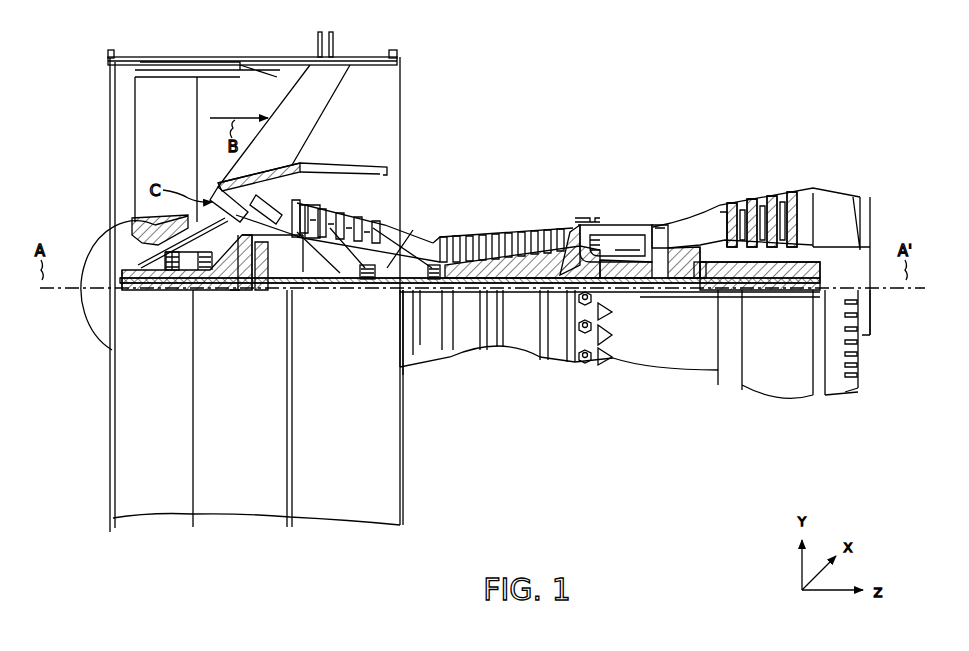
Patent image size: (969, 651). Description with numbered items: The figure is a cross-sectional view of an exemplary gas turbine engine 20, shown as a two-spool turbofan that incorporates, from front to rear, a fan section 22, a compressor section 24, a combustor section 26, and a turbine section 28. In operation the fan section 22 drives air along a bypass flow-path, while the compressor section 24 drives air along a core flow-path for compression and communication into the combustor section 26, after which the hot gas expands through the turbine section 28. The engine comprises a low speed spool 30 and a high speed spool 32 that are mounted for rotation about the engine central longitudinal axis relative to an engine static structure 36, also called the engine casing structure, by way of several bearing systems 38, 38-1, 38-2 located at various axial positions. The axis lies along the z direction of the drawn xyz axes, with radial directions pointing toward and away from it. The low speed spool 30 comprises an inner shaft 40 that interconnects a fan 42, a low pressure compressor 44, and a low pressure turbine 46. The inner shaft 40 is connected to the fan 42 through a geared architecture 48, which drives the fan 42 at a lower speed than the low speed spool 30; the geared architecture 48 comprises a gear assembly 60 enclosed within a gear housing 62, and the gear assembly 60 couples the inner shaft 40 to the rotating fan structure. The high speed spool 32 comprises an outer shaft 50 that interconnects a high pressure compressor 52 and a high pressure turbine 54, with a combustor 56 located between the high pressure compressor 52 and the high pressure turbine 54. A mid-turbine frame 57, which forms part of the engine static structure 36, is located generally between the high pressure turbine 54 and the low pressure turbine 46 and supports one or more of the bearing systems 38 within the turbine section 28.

The gas turbine engine 20 is at (653, 84).
The fan section 22 is at (290, 42).
The compressor section 24 is at (300, 139).
The combustor section 26 is at (570, 139).
The turbine section 28 is at (820, 139).
The low speed spool 30 is at (526, 300).
The high speed spool 32 is at (570, 230).
The engine static structure 36 is at (678, 356).
The bearing system 38 is at (700, 285).
The bearing system 38-1 is at (168, 292).
The bearing system 38-2 is at (362, 290).
The inner shaft 40 is at (417, 300).
The fan 42 is at (154, 149).
The low pressure compressor 44 is at (346, 219).
The low pressure turbine 46 is at (760, 201).
The geared architecture 48 is at (262, 306).
The outer shaft 50 is at (611, 275).
The high pressure compressor 52 is at (489, 235).
The high pressure turbine 54 is at (652, 231).
The combustor 56 is at (612, 240).
The mid-turbine frame 57 is at (695, 223).
The gear assembly 60 is at (269, 278).
The gear housing 62 is at (268, 248).